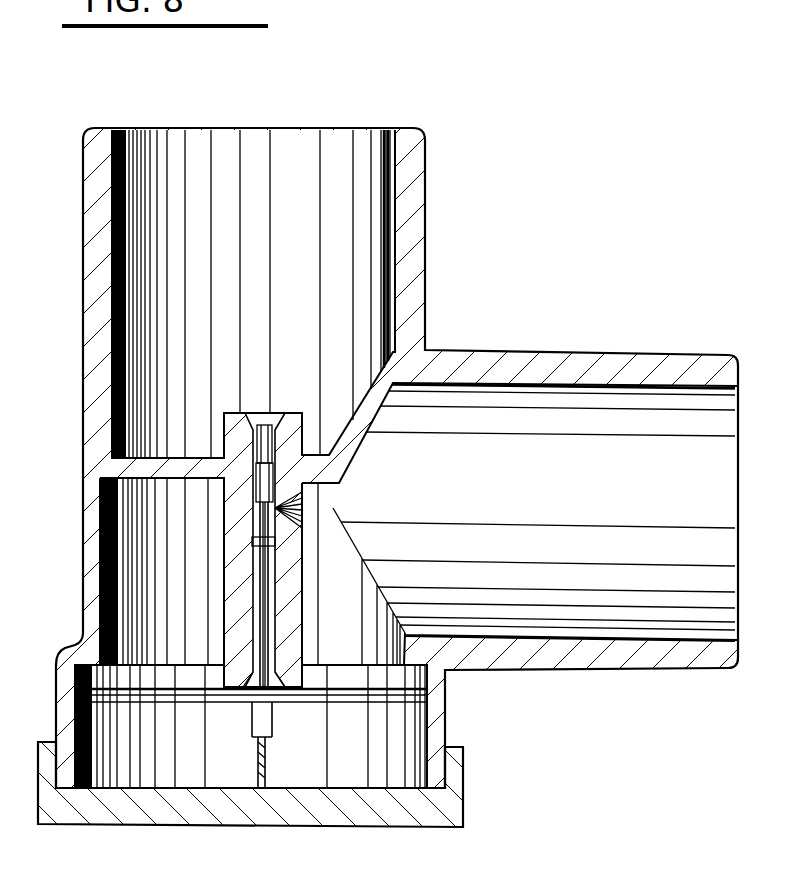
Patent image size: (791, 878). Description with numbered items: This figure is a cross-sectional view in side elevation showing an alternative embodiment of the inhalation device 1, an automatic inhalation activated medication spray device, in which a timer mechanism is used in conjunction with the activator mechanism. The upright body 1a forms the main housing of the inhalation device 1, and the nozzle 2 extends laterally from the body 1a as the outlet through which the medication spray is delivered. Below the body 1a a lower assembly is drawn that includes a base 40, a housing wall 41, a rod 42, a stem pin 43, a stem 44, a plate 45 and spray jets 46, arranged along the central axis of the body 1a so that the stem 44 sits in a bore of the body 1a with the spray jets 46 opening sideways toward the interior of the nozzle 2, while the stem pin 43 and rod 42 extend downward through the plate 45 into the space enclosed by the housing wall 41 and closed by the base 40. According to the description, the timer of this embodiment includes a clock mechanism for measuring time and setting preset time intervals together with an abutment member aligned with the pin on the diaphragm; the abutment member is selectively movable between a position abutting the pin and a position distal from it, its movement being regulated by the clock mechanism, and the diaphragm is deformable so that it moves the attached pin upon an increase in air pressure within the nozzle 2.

The inhalation device 1 is at (447, 217).
The body 1a is at (427, 278).
The nozzle 2 is at (672, 486).
The base plate 40 is at (457, 772).
The housing wall 41 is at (65, 702).
The rod 42 is at (265, 756).
The stem pin 43 is at (253, 732).
The valve stem 44 is at (265, 581).
The plate 45 is at (387, 697).
The spray jets 46 is at (300, 511).